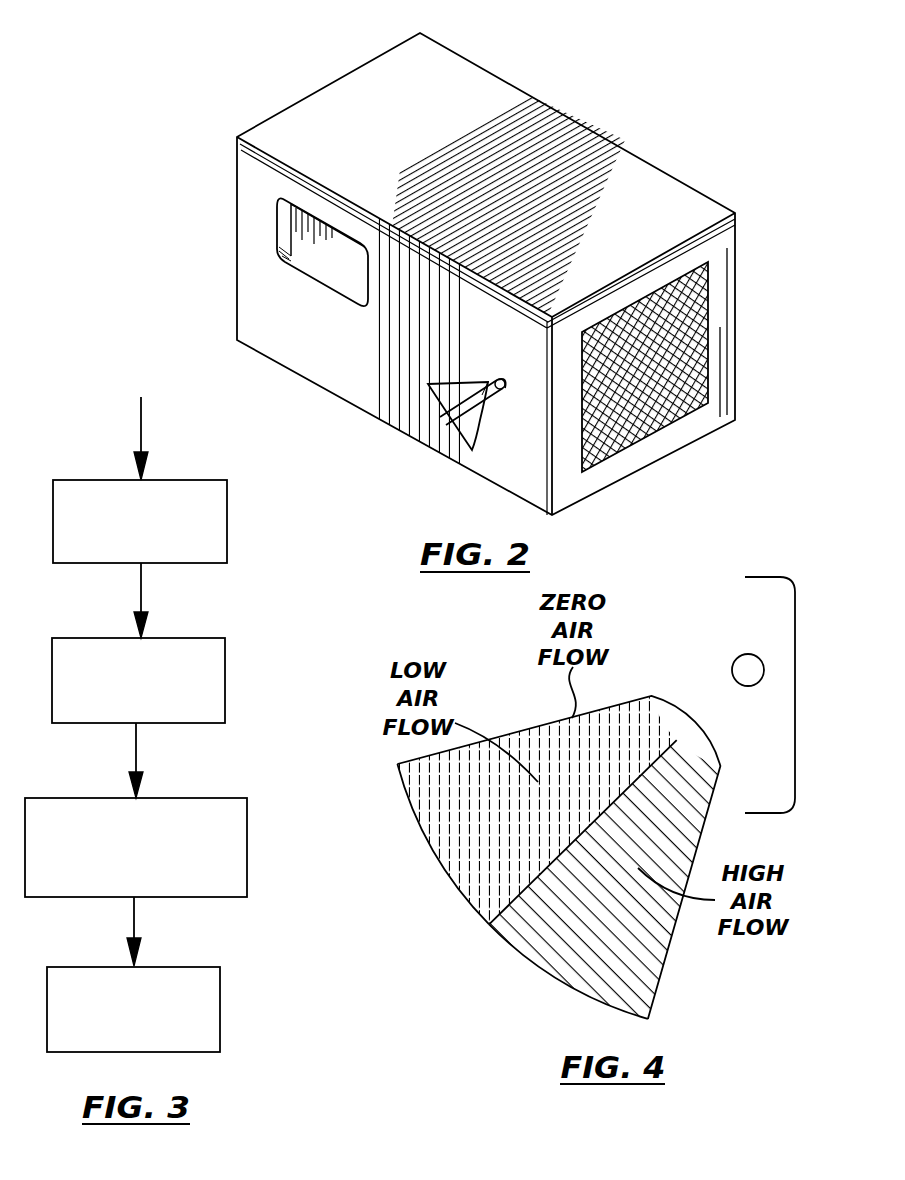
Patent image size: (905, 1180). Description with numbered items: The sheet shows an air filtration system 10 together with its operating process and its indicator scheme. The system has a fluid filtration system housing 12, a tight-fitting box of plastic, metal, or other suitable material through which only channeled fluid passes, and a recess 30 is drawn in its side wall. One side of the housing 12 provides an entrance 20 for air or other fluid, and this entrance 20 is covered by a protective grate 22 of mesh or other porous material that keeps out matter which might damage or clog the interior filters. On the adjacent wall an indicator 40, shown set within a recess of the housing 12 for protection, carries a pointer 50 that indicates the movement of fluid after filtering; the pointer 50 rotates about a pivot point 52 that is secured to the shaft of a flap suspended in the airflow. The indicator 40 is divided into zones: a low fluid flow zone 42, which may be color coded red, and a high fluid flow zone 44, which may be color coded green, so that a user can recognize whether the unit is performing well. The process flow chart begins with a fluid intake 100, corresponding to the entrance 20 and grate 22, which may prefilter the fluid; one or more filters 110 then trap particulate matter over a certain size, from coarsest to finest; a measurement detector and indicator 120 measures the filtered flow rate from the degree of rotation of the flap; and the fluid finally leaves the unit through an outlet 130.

In FIG. 2, the air filtration system 10 is at (606, 93).
In FIG. 2, the fluid filtration system housing 12 is at (470, 86).
In FIG. 2, the entrance 20 is at (720, 345).
In FIG. 2, the protective grate 22 is at (670, 302).
In FIG. 2, the handle recess 30 is at (303, 228).
In FIG. 2, the indicator 40 is at (462, 432).
In FIG. 4, the indicator 40 is at (665, 970).
In FIG. 4, the low fluid flow zone 42 is at (442, 875).
In FIG. 4, the high fluid flow zone 44 is at (590, 998).
In FIG. 2, the pointer 50 is at (500, 395).
In FIG. 4, the pivot point 52 is at (748, 668).
In FIG. 3, the fluid intake 100 is at (215, 538).
In FIG. 3, the filters 110 is at (212, 690).
In FIG. 3, the measurement detector and indicator 120 is at (220, 852).
In FIG. 3, the outlet 130 is at (210, 1030).